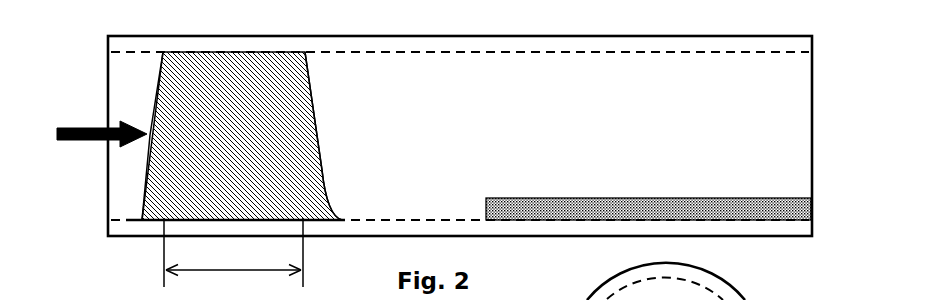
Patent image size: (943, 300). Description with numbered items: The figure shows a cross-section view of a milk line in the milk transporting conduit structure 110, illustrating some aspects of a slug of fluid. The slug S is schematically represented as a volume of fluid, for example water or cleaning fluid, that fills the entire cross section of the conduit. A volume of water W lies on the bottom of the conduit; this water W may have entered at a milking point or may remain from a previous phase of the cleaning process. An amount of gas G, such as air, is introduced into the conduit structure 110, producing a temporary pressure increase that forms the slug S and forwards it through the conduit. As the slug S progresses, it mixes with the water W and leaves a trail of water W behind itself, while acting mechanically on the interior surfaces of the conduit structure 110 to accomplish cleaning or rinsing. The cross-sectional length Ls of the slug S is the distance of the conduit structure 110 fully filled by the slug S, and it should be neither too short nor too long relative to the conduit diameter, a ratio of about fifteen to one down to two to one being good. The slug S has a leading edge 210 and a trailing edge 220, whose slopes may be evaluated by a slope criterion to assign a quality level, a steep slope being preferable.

The milk transporting conduit structure 110 is at (460, 118).
The leading edge 210 is at (402, 136).
The trailing edge 220 is at (95, 136).
The slug S is at (254, 136).
The water W is at (648, 178).
The gas G is at (87, 136).
The cross-sectional length of the slug Ls is at (233, 252).